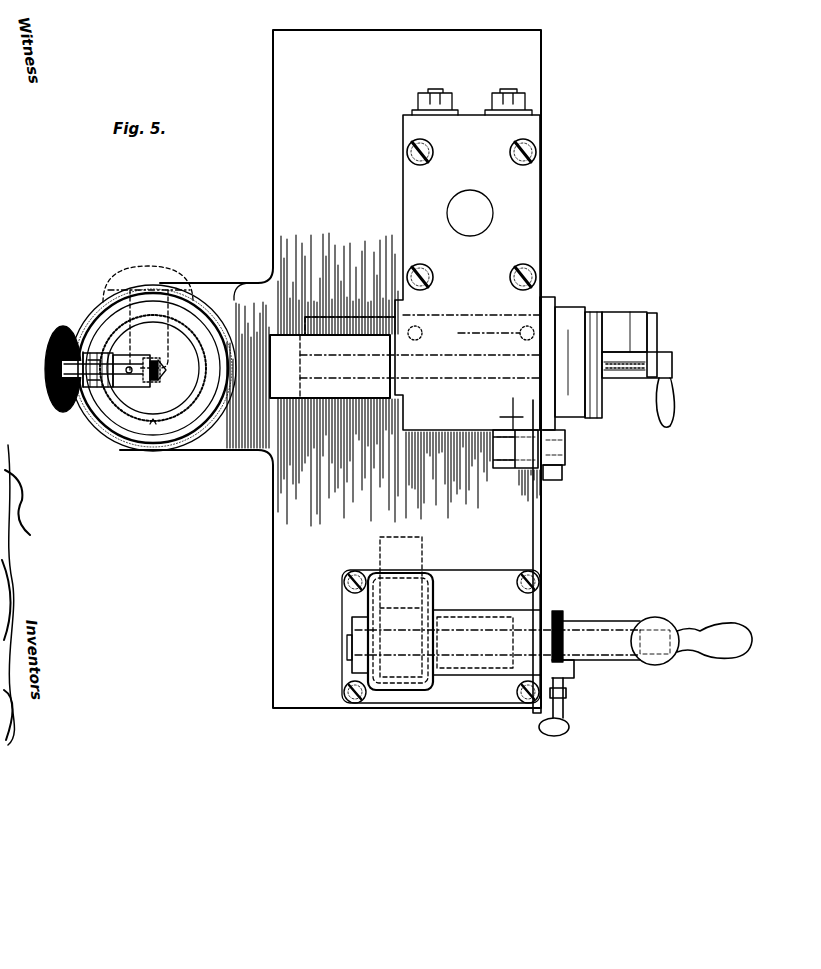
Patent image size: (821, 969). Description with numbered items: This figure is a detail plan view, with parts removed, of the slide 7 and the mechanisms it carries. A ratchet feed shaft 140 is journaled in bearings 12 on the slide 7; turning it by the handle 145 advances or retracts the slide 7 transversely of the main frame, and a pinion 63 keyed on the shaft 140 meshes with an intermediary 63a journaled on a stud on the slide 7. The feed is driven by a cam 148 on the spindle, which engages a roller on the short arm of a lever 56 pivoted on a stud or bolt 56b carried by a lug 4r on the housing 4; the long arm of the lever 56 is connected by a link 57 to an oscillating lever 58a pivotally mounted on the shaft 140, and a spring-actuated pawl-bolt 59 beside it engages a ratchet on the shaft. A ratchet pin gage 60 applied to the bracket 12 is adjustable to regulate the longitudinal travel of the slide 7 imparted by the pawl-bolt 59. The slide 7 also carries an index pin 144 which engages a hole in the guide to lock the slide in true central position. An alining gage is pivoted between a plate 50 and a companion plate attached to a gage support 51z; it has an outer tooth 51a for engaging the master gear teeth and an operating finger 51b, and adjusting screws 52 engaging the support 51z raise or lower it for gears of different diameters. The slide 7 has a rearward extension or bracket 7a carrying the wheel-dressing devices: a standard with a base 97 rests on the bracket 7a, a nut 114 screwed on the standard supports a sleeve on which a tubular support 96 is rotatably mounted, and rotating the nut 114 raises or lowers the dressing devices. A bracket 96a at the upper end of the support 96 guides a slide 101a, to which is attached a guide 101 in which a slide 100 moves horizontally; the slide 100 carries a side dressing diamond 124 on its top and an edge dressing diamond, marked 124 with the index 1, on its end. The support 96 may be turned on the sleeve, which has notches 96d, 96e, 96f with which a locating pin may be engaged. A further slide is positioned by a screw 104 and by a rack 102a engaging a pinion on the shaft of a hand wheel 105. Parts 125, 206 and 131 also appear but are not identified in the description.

The slide 7 is at (330, 369).
The rearward extension or bracket 7a is at (242, 448).
The housing 4 is at (420, 259).
The lug 4r is at (499, 414).
The index pin 144 is at (465, 200).
The adjusting screws 52 is at (422, 333).
The plate 50 is at (308, 324).
The bearing sleeve 125 is at (330, 366).
The cam 148 is at (567, 393).
The collar 206 is at (597, 312).
The gage support 51z is at (619, 320).
The outer tooth 51a is at (631, 368).
The operating finger 51b is at (676, 406).
The lever 56 is at (567, 431).
The stud or bolt 56b is at (567, 460).
The link 57 is at (541, 530).
The pinion 63 is at (368, 610).
The intermediary 63a is at (410, 553).
The ratchet feed shaft 140 is at (352, 645).
The bearings 12 is at (475, 613).
The collar 131 is at (560, 611).
The handle 145 is at (717, 637).
The ratchet pin gage 60 is at (568, 671).
The oscillating lever 58a is at (555, 700).
The pawl-bolt 59 is at (560, 728).
The tubular support 96 is at (198, 339).
The base 97 is at (178, 325).
The notch 96d is at (153, 368).
The notch 96e is at (153, 373).
The nut 114 is at (228, 355).
The hand wheel 105 is at (150, 266).
The notch 96f is at (177, 293).
The screw 104 is at (46, 363).
The guide 101 is at (125, 372).
The slide 101a is at (95, 345).
The slide 100 is at (123, 357).
The side dressing diamond 124 is at (130, 372).
The edge dressing diamond 1 is at (175, 370).
The bracket 96a is at (56, 406).
The rack 102a is at (82, 421).